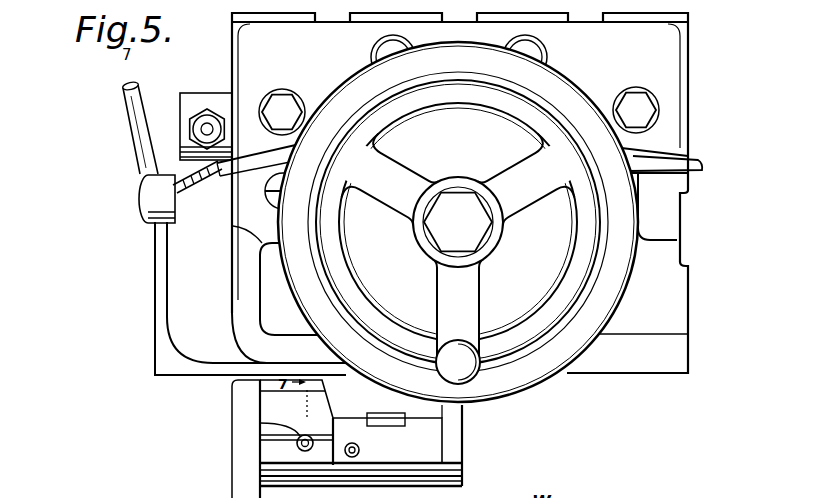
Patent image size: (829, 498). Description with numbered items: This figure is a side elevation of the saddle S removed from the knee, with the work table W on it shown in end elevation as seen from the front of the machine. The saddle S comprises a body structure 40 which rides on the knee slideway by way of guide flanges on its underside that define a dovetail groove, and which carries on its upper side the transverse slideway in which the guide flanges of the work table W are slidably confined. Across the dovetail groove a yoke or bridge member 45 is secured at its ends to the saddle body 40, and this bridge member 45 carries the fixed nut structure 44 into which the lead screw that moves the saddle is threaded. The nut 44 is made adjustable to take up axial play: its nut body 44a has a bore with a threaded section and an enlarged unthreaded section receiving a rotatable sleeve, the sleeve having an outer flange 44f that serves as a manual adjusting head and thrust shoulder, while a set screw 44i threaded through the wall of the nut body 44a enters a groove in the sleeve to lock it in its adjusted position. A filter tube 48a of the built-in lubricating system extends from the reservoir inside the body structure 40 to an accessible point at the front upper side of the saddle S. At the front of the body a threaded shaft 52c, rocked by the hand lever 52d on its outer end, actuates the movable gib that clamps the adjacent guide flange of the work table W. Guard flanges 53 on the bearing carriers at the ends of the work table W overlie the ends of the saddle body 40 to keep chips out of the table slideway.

The work table W is at (662, 48).
The saddle S is at (663, 352).
The body structure 40 is at (167, 360).
The fixed nut structure 44 is at (448, 448).
The nut body 44a is at (455, 474).
The flange 44f is at (250, 393).
The set screw 44i is at (260, 423).
The yoke or bridge member 45 is at (425, 411).
The filter tube 48a is at (220, 172).
The threaded shaft 52c is at (157, 207).
The hand lever 52d is at (138, 115).
The guard flanges 53 is at (673, 160).